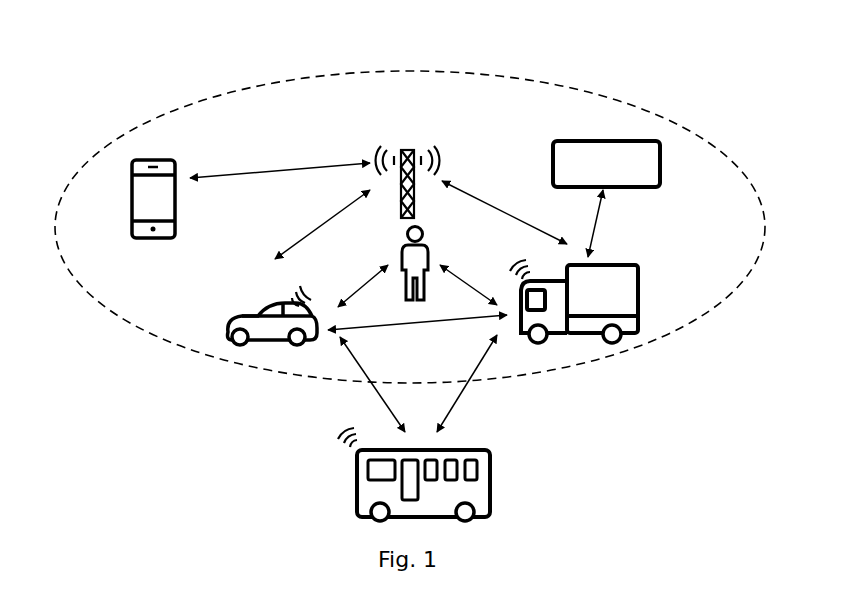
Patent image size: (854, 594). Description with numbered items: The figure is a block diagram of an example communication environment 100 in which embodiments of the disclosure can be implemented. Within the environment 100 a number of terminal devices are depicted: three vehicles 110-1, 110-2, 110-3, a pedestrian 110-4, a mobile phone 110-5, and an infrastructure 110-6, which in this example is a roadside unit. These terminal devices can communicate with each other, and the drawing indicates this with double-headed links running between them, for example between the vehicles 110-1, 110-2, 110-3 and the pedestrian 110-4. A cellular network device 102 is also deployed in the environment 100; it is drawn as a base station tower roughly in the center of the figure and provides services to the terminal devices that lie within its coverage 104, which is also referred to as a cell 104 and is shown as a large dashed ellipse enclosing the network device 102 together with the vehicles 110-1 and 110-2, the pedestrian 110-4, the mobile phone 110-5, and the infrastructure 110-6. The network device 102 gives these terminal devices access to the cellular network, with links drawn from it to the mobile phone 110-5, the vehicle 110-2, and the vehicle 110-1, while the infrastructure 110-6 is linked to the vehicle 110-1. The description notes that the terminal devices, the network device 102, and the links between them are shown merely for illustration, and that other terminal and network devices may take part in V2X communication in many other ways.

The communication environment 100 is at (213, 58).
The cellular network device 102 is at (442, 158).
The coverage 104 is at (615, 102).
The vehicle 110-1 is at (615, 265).
The vehicle 110-2 is at (258, 305).
The vehicle 110-3 is at (466, 451).
The pedestrian 110-4 is at (430, 250).
The mobile phone 110-5 is at (160, 160).
The infrastructure 110-6 is at (618, 141).